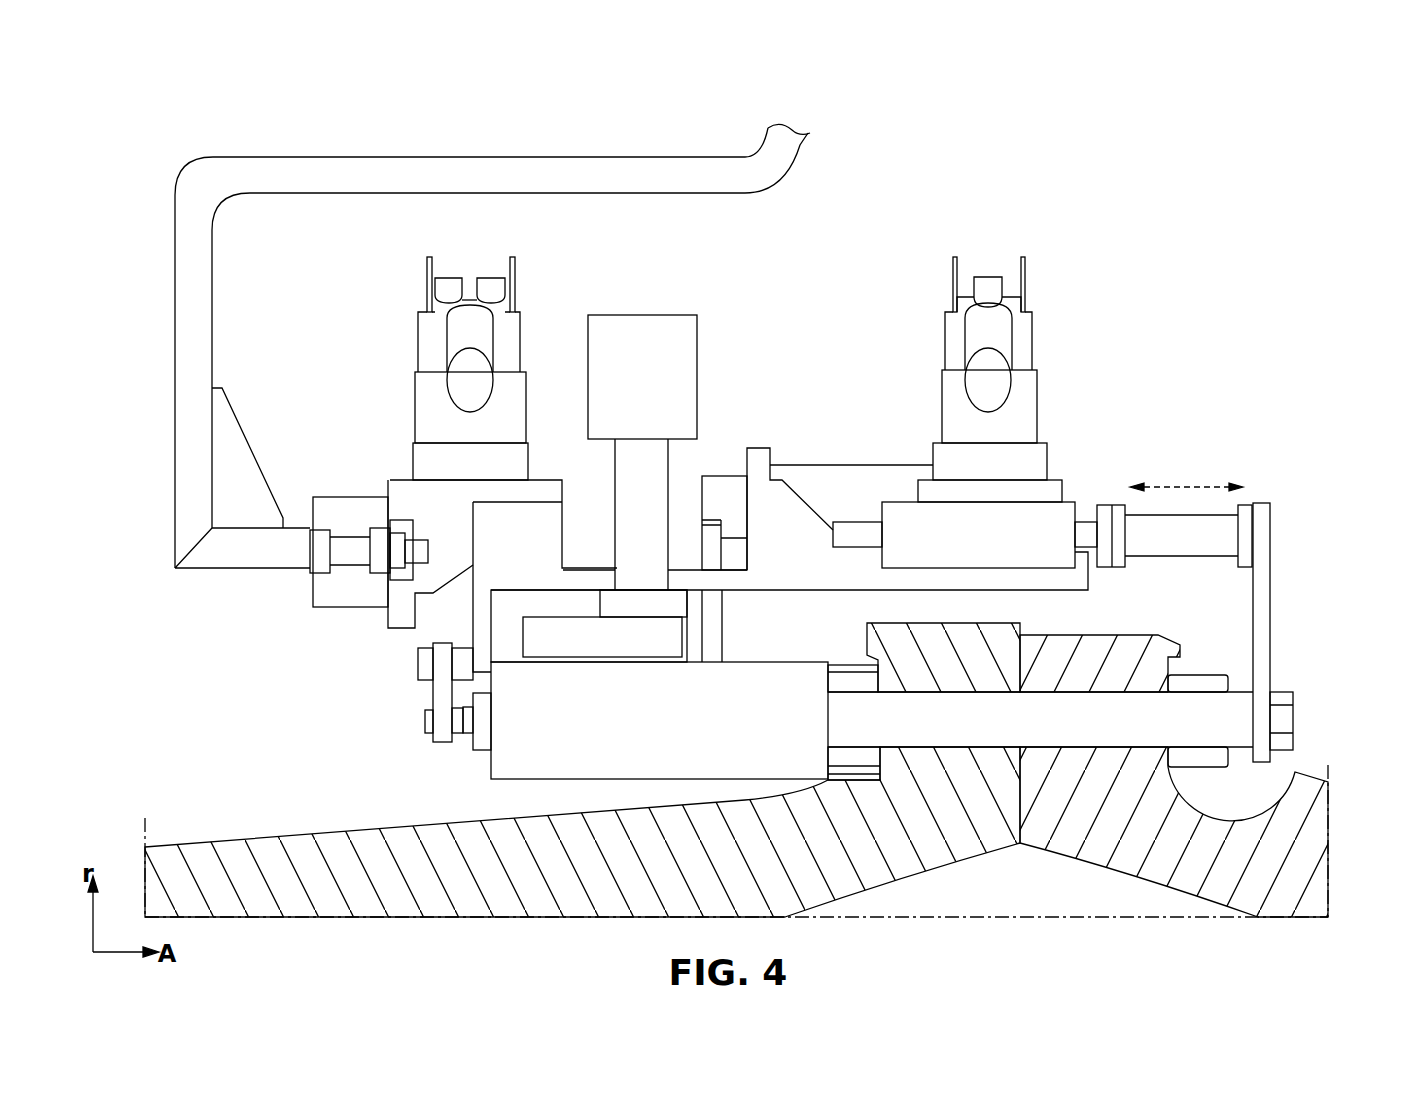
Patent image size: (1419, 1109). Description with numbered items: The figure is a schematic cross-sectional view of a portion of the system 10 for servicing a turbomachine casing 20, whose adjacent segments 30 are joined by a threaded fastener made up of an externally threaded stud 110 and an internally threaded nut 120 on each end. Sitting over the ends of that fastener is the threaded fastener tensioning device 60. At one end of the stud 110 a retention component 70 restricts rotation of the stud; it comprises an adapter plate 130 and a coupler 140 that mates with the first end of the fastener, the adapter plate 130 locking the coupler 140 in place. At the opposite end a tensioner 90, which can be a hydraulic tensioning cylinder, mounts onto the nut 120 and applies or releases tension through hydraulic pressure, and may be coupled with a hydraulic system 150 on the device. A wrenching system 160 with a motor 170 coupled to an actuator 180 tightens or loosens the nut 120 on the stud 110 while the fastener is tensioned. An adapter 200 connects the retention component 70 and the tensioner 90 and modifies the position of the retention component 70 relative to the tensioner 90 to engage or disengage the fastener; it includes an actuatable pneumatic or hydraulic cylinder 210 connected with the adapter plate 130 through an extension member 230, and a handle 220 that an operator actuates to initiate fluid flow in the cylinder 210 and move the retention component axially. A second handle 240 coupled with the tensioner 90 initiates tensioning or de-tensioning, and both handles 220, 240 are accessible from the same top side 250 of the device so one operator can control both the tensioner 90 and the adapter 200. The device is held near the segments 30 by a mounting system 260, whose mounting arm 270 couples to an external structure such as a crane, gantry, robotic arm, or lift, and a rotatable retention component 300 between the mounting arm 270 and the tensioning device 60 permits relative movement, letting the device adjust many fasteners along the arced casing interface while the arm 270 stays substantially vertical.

The system 10 is at (335, 108).
The turbomachine casing 20 is at (1300, 830).
The segments 30 is at (753, 872).
The threaded fastener tensioning device 60 is at (1083, 254).
The retention component 70 is at (1303, 752).
The tensioner 90 is at (653, 734).
The threaded stud 110 is at (1003, 734).
The nut 120 is at (858, 685).
The adapter plate 130 is at (1258, 613).
The coupler 140 is at (1283, 718).
The hydraulic system 150 is at (618, 388).
The wrenching system 160 is at (799, 421).
The motor 170 is at (837, 495).
The actuator 180 is at (725, 492).
The adapter 200 is at (1080, 451).
The actuatable cylinder 210 is at (995, 545).
The handle 220 is at (968, 338).
The extension member 230 is at (1157, 546).
The second handle 240 is at (460, 342).
The same side 250 is at (1294, 301).
The mounting system 260 is at (152, 373).
The mounting arm 270 is at (540, 175).
The rotatable retention component 300 is at (357, 507).